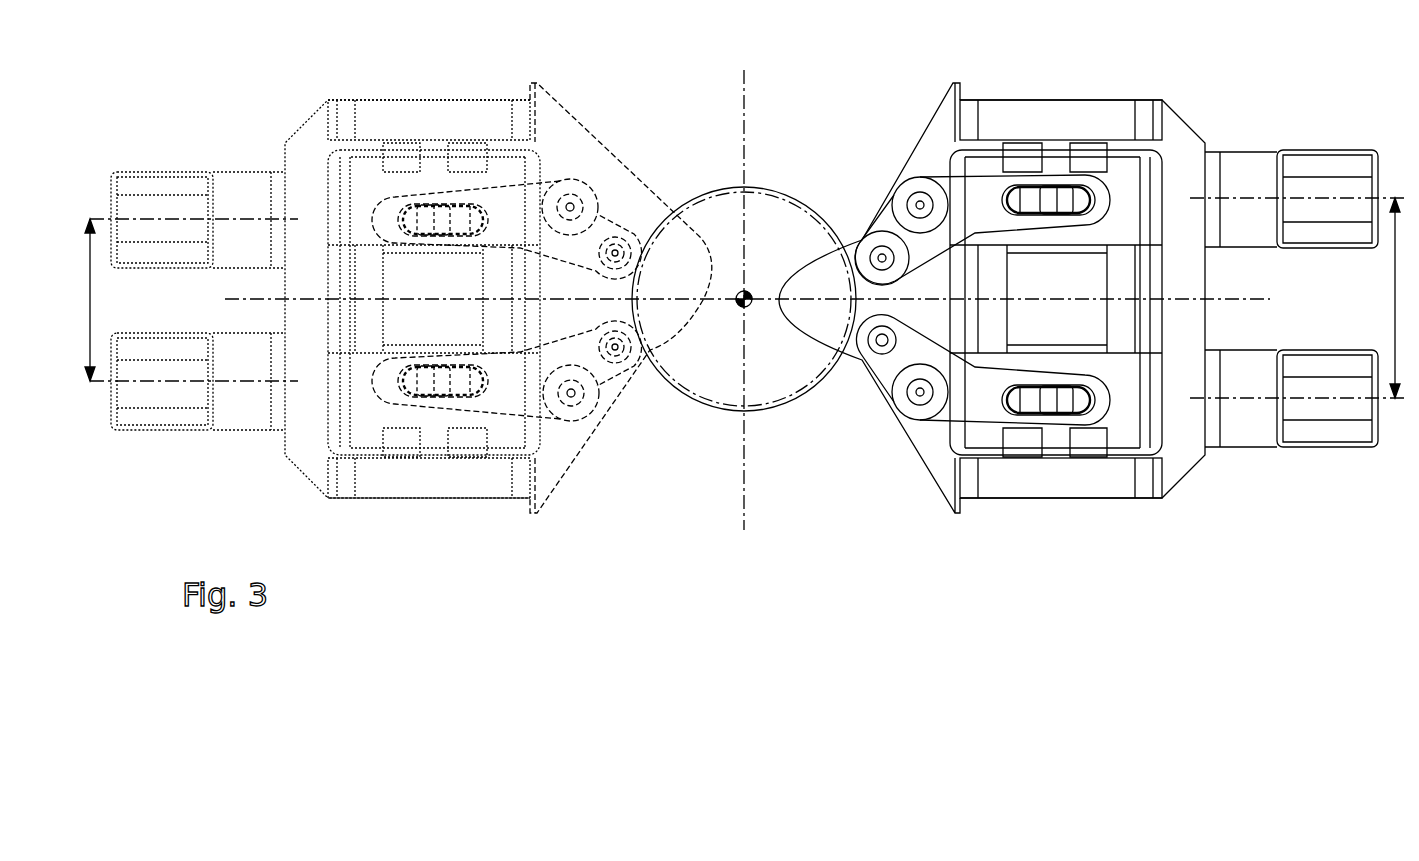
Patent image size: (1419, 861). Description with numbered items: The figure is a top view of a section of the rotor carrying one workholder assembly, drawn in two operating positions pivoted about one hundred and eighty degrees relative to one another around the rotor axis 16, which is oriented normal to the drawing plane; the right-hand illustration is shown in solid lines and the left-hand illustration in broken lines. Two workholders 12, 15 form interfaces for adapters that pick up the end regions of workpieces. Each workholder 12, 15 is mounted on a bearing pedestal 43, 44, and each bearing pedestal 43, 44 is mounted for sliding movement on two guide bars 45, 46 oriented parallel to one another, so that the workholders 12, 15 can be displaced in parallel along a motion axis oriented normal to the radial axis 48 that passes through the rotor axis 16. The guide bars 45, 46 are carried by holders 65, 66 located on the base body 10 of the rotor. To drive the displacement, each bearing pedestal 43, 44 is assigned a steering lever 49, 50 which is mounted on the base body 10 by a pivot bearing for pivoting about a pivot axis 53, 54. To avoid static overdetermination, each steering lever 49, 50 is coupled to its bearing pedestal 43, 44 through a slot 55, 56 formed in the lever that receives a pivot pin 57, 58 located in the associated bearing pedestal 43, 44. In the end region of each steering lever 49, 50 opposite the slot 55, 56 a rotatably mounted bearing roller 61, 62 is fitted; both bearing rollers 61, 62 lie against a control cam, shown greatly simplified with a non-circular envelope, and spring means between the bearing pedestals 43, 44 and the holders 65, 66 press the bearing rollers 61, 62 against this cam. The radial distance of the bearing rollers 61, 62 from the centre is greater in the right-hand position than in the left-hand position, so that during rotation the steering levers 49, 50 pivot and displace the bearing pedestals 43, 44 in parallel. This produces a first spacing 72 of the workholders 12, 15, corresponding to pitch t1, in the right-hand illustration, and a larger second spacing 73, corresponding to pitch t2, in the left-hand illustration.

The base body 10 is at (315, 468).
The workholder 12 is at (162, 190).
The workholder 15 is at (153, 412).
The rotor axis 16 is at (744, 291).
The bearing pedestal 43 is at (370, 208).
The bearing pedestal 44 is at (373, 410).
The guide bar 45 is at (497, 328).
The guide bar 46 is at (370, 280).
The radial axis 48 is at (247, 302).
The steering lever 49 is at (605, 228).
The steering lever 50 is at (606, 378).
The pivot axis 53 is at (570, 205).
The pivot axis 54 is at (571, 395).
The slot 55 is at (470, 228).
The slot 56 is at (472, 372).
The pivot pin 57 is at (435, 215).
The pivot pin 58 is at (434, 382).
The bearing roller 61 is at (636, 236).
The bearing roller 62 is at (636, 360).
The holder 65 is at (480, 130).
The holder 66 is at (490, 485).
The first spacing 72 is at (1394, 300).
The second spacing 73 is at (88, 302).